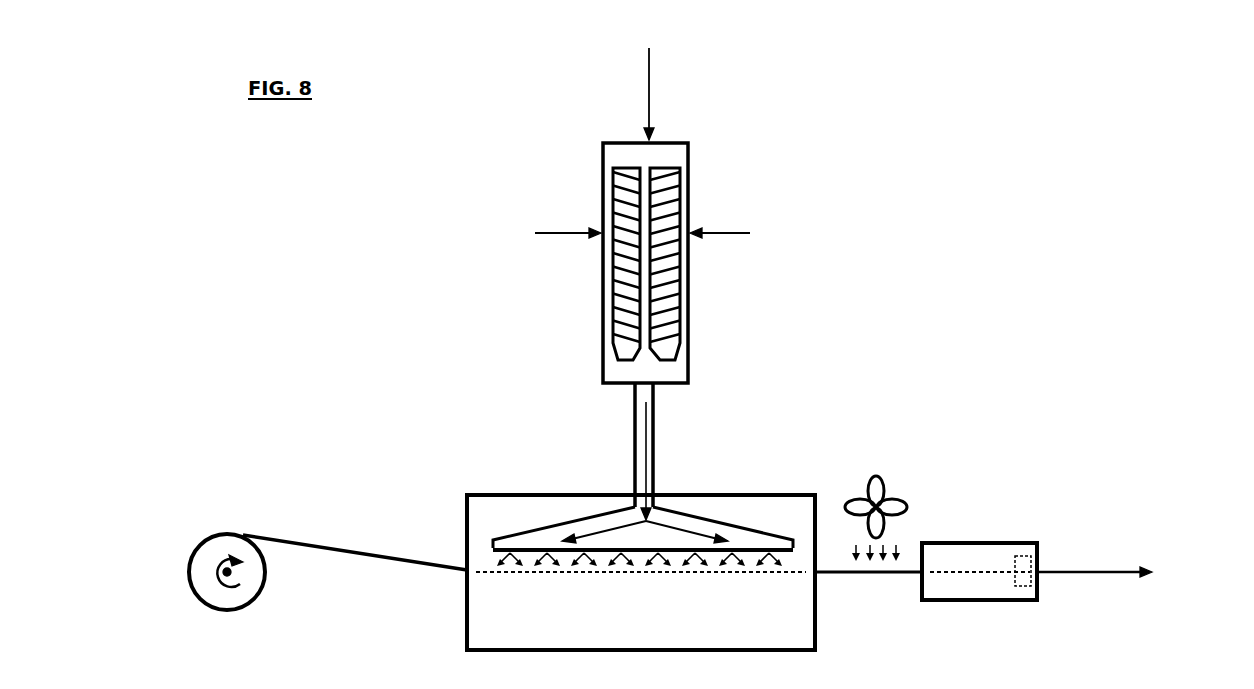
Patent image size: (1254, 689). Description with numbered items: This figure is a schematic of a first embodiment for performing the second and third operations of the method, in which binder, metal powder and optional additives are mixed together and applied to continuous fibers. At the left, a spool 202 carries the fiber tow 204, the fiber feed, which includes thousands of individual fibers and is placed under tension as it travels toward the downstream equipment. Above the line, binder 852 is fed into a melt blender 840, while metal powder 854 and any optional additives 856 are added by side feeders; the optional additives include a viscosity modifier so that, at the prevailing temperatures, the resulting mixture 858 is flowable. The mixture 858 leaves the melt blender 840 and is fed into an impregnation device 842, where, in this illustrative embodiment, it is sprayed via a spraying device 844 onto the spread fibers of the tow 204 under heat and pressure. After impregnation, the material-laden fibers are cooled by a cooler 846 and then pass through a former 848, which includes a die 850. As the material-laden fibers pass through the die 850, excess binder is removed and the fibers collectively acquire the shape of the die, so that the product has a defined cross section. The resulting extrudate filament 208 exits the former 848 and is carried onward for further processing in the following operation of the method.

The melt blender 840 is at (603, 162).
The binder 852 is at (645, 80).
The metal powder 854 is at (507, 234).
The optional additives 856 is at (764, 234).
The mixture 858 is at (640, 452).
The impregnation device 842 is at (680, 494).
The spraying device 844 is at (715, 521).
The cooler 846 is at (875, 478).
The former 848 is at (985, 543).
The die 850 is at (1024, 591).
The extrudate filament 208 is at (1085, 574).
The fiber tow 204 is at (274, 540).
The spool 202 is at (252, 603).